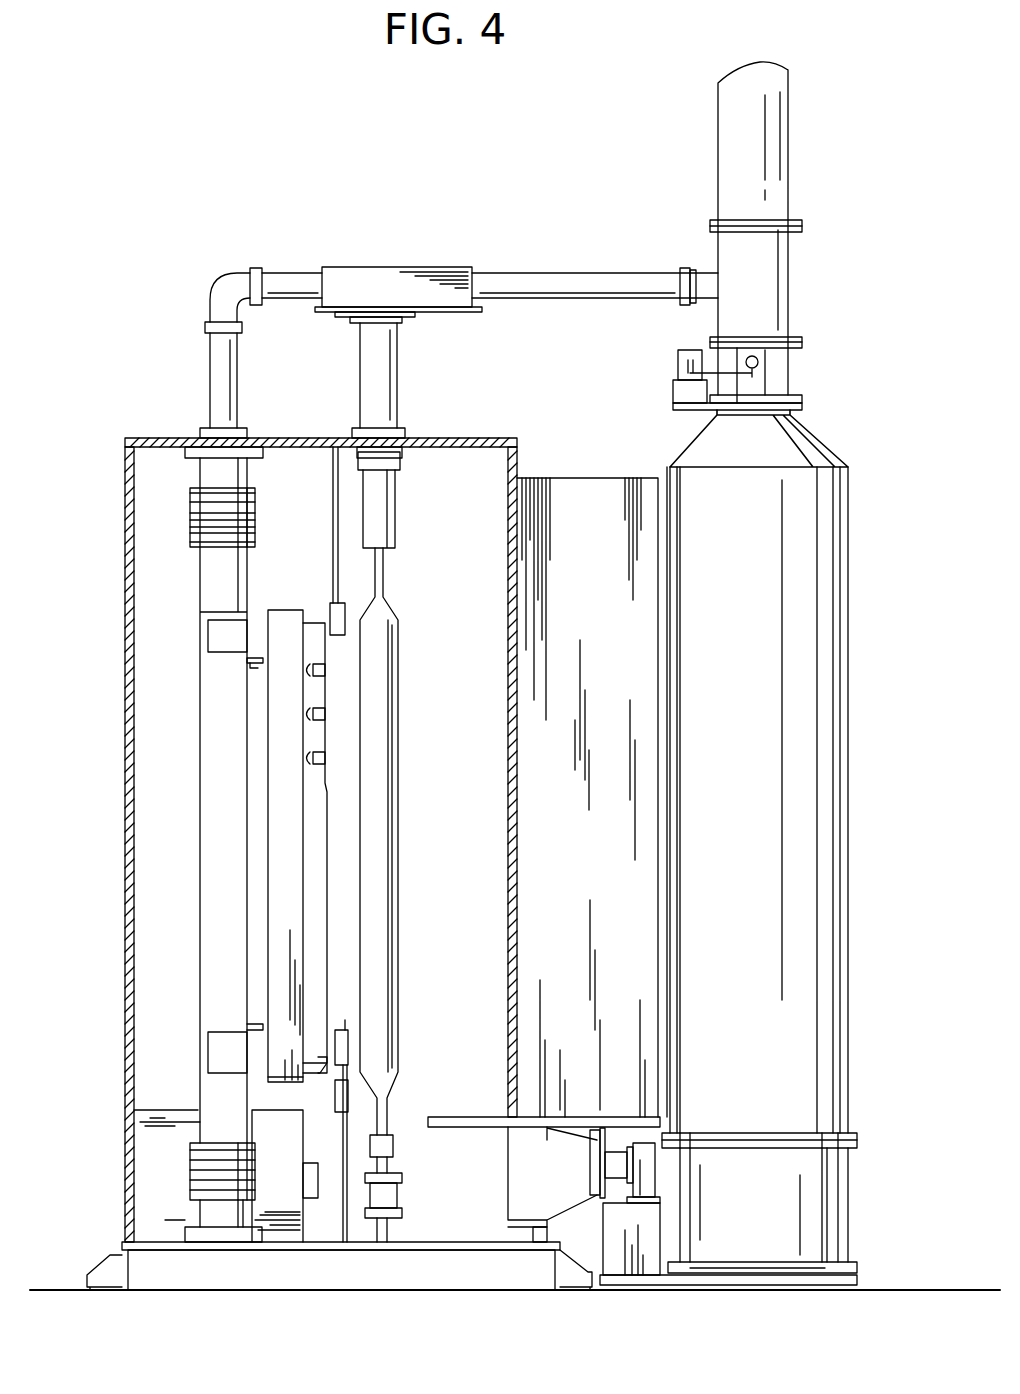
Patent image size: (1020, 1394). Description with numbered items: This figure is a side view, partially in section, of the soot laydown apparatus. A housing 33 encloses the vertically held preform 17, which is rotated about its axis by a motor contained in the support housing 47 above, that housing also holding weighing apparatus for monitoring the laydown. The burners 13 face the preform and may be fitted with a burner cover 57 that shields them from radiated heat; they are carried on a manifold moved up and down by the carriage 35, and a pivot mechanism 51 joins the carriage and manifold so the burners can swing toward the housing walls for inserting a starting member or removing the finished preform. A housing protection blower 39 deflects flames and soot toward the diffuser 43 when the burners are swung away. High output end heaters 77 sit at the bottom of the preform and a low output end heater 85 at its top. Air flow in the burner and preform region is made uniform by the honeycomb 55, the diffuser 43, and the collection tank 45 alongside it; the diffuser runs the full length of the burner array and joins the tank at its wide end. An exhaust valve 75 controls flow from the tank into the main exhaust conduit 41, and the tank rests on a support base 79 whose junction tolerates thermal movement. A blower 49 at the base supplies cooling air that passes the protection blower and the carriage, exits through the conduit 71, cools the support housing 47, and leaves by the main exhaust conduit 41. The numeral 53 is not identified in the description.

The burners 13 is at (325, 715).
The preform 17 is at (378, 883).
The housing 33 is at (127, 688).
The carriage 35 is at (220, 890).
The housing protection blower 39 is at (150, 1165).
The main exhaust conduit 41 is at (765, 127).
The diffuser 43 is at (580, 486).
The collection tank 45 is at (776, 826).
The support housing 47 is at (362, 278).
The blower 49 is at (640, 1275).
The pivot mechanism 51 is at (258, 682).
The lower bracket 53 is at (258, 1025).
The honeycomb 55 is at (278, 792).
The burner cover 57 is at (323, 1057).
The conduit 71 is at (218, 380).
The exhaust valve 75 is at (758, 388).
The high output end heaters 77 is at (348, 1042).
The support base 79 is at (771, 1216).
The low output end heater 85 is at (340, 612).